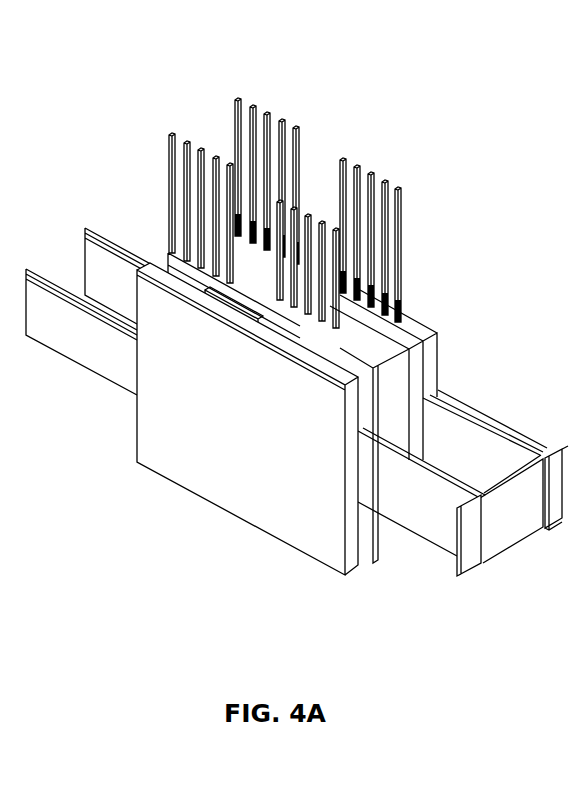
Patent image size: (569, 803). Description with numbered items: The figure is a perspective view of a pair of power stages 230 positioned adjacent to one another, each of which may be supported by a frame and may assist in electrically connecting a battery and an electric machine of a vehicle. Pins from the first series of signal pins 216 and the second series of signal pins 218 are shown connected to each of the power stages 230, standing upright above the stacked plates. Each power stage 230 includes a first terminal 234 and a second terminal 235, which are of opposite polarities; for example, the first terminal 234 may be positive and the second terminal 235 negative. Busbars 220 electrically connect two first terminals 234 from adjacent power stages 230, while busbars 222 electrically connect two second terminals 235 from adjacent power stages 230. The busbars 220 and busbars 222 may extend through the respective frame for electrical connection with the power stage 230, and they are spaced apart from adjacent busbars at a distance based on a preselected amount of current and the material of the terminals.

The first series of signal pins 216 is at (238, 90).
The second series of signal pins 218 is at (311, 204).
The busbars 220 is at (478, 452).
The busbars 222 is at (528, 447).
The power stage 230 is at (440, 281).
The first terminal 234 is at (363, 420).
The second terminal 235 is at (438, 360).